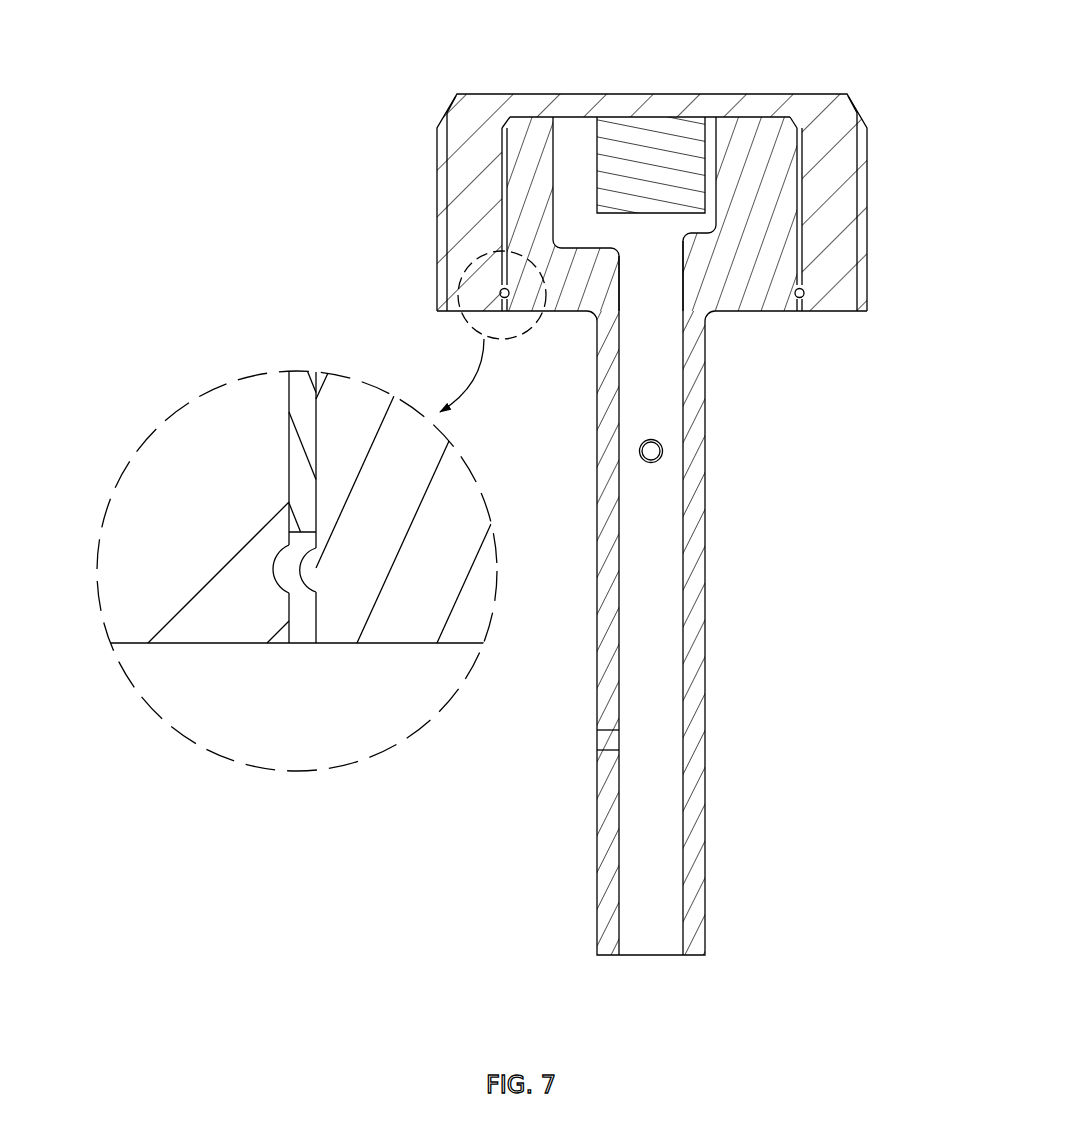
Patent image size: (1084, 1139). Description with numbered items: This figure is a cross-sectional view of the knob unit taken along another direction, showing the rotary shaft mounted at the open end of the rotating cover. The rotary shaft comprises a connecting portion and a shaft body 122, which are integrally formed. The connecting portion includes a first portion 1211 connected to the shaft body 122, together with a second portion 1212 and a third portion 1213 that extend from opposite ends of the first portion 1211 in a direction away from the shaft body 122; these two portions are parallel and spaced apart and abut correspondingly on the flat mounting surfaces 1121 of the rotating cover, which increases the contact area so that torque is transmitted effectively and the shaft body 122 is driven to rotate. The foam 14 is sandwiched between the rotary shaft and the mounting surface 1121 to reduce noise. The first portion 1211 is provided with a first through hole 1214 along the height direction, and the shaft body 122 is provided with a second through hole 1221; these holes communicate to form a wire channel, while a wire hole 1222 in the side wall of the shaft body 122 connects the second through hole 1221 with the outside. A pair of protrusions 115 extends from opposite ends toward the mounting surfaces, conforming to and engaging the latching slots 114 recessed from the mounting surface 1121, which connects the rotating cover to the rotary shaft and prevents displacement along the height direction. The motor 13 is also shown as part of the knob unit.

The motor 13 is at (648, 152).
The foam 14 is at (505, 218).
The latching slot 114 is at (275, 571).
The protrusion 115 is at (302, 570).
The mounting surface 1121 is at (289, 485).
The first portion 1211 is at (738, 272).
The second portion 1212 is at (537, 175).
The third portion 1213 is at (762, 160).
The first through hole 1214 is at (650, 278).
The shaft body 122 is at (695, 663).
The second through hole 1221 is at (650, 538).
The wire hole 1222 is at (614, 739).